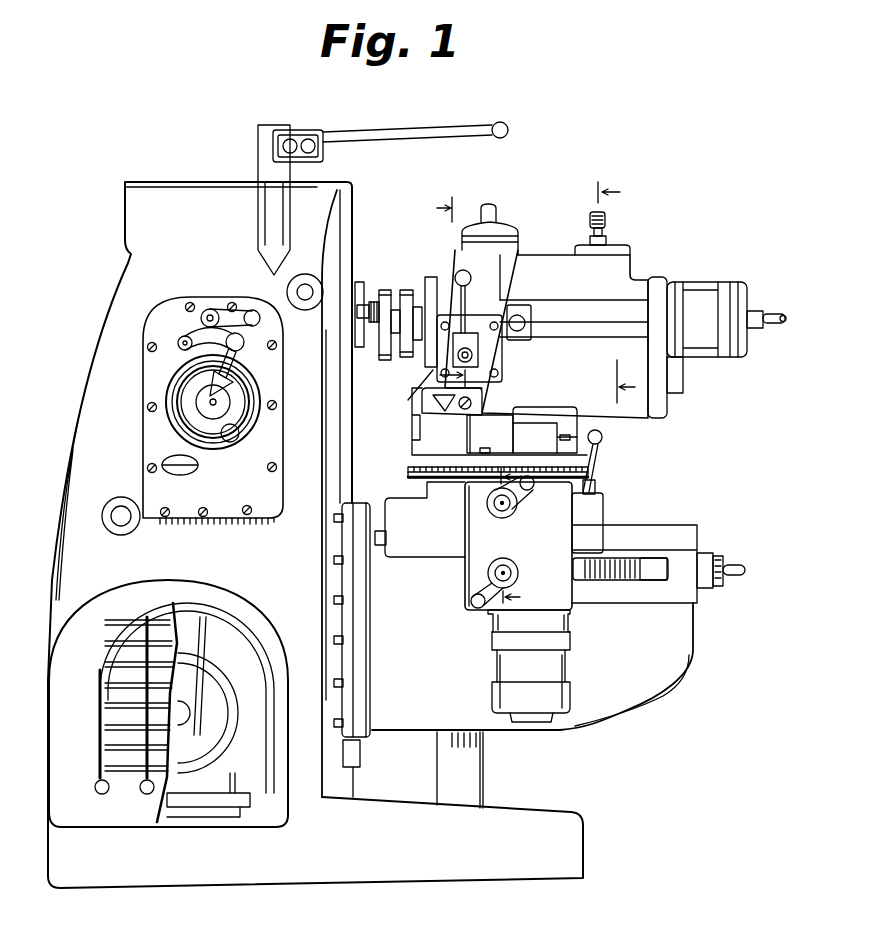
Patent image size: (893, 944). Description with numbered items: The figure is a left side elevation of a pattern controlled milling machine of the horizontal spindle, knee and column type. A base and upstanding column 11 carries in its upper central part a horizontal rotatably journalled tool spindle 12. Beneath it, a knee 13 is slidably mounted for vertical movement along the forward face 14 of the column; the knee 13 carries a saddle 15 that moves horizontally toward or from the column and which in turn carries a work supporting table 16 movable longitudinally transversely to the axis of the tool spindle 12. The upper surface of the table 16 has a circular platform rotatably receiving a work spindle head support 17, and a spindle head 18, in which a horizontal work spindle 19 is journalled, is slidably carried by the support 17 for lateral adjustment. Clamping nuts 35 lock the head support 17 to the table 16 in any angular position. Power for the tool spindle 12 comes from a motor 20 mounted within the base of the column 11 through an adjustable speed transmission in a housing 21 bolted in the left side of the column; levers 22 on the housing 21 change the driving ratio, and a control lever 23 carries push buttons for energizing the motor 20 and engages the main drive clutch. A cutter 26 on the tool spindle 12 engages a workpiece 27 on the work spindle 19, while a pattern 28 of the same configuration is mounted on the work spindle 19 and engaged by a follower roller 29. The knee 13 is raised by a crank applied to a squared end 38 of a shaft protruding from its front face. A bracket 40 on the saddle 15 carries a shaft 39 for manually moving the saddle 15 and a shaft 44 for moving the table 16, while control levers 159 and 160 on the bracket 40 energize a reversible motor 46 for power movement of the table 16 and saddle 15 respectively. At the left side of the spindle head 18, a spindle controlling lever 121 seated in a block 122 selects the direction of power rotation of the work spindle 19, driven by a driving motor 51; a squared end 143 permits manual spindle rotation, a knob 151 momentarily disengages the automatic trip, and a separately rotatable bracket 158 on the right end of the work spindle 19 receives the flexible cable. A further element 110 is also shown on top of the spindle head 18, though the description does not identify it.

The column 11 is at (93, 358).
The tool spindle 12 is at (358, 281).
The knee 13 is at (615, 695).
The forward face of the column 14 is at (353, 452).
The saddle 15 is at (604, 507).
The work supporting table 16 is at (596, 481).
The work spindle head support 17 is at (570, 457).
The spindle head 18 is at (650, 407).
The work spindle 19 is at (420, 330).
The motor 20 is at (213, 712).
The transmission housing 21 is at (263, 513).
The levers 22 is at (242, 340).
The control lever 23 is at (417, 127).
The cutter 26 is at (374, 301).
The workpiece 27 is at (385, 360).
The pattern 28 is at (411, 357).
The follower roller 29 is at (415, 300).
The clamping nuts 35 is at (486, 447).
The squared end 38 is at (740, 560).
The shaft 39 is at (513, 567).
The bracket 40 is at (560, 598).
The shaft 44 is at (492, 518).
The motor 46 is at (493, 695).
The driving motor 51 is at (718, 280).
The knob 110 is at (608, 218).
The spindle controlling lever 121 is at (469, 276).
The block 122 is at (473, 355).
The squared end 143 is at (497, 209).
The knob 151 is at (518, 314).
The bracket 158 is at (787, 311).
The control lever 159 is at (602, 441).
The control lever 160 is at (590, 575).